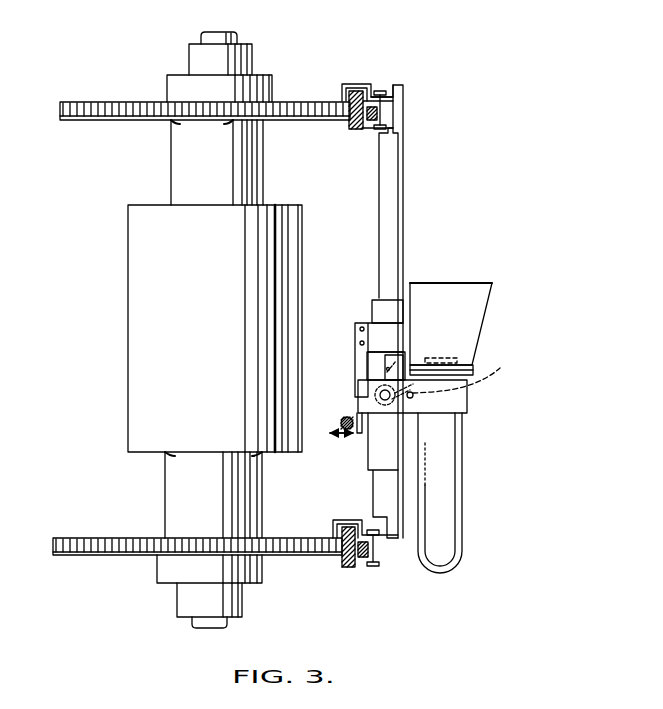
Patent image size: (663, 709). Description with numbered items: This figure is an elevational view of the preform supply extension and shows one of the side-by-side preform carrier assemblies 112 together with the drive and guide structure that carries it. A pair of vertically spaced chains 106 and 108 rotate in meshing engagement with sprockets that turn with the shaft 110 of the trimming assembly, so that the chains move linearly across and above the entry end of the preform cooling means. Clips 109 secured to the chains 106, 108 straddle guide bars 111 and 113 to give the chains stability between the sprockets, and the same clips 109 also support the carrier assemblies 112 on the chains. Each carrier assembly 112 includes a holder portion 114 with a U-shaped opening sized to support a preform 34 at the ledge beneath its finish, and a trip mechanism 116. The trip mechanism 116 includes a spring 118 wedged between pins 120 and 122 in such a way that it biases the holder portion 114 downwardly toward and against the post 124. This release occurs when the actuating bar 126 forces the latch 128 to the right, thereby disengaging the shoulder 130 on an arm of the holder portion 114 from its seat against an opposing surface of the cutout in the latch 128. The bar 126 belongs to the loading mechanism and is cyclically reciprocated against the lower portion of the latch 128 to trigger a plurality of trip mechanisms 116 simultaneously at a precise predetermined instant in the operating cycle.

The preform 34 is at (473, 495).
The chain 106 is at (386, 113).
The chain 108 is at (378, 555).
The clip 109 is at (376, 88).
The shaft 110 is at (187, 164).
The guide bar 111 is at (354, 132).
The preform carrier assembly 112 is at (353, 300).
The guide bar 113 is at (342, 566).
The holder portion 114 is at (362, 83).
The trip mechanism 116 is at (350, 371).
The spring 118 is at (472, 382).
The pin 120 is at (386, 366).
The pin 122 is at (412, 399).
The post 124 is at (377, 460).
The actuating bar 126 is at (343, 418).
The latch 128 is at (361, 357).
The shoulder 130 is at (358, 404).